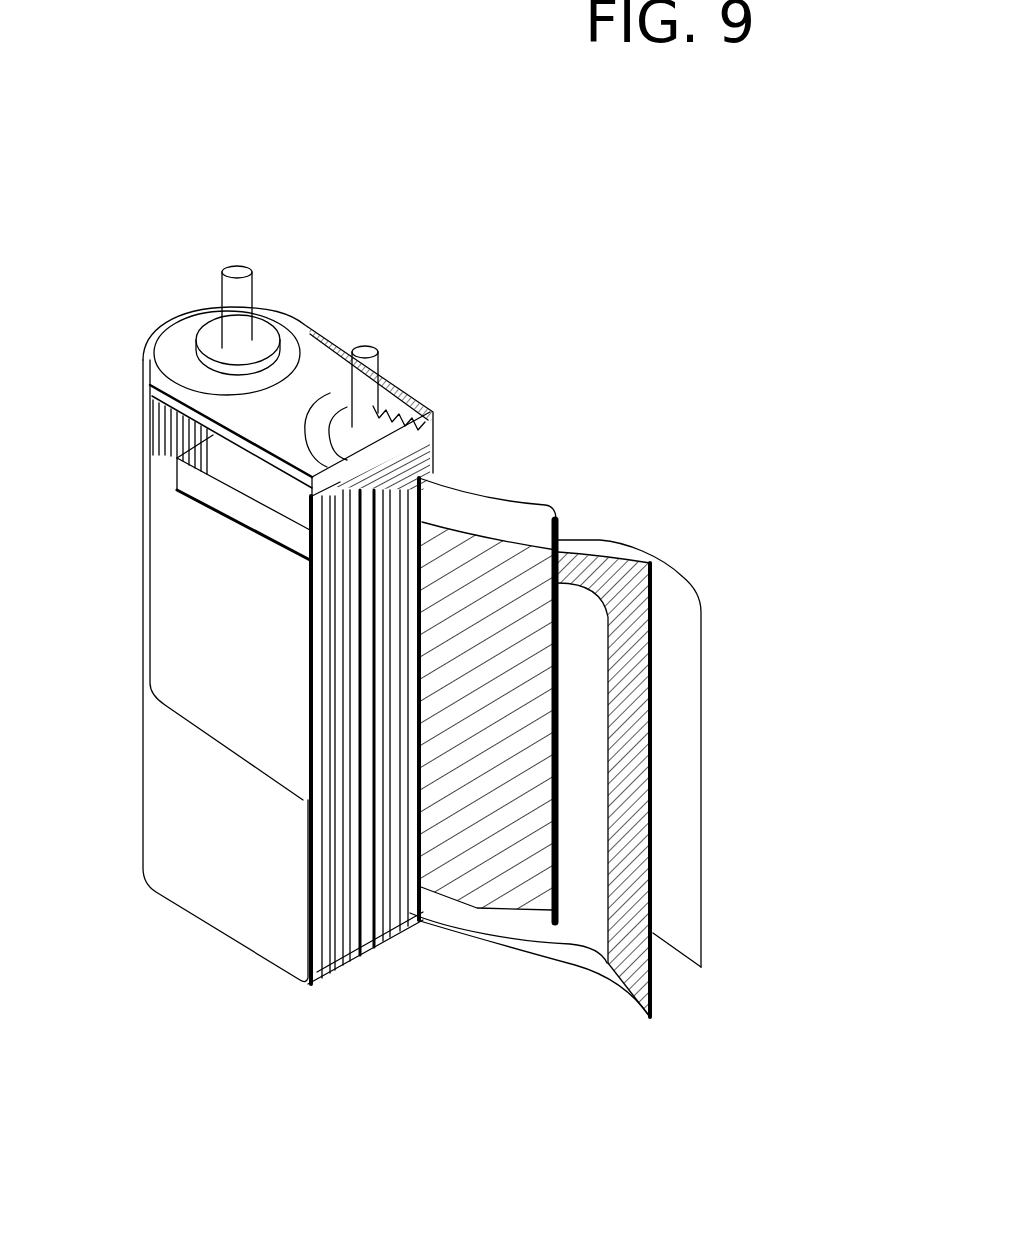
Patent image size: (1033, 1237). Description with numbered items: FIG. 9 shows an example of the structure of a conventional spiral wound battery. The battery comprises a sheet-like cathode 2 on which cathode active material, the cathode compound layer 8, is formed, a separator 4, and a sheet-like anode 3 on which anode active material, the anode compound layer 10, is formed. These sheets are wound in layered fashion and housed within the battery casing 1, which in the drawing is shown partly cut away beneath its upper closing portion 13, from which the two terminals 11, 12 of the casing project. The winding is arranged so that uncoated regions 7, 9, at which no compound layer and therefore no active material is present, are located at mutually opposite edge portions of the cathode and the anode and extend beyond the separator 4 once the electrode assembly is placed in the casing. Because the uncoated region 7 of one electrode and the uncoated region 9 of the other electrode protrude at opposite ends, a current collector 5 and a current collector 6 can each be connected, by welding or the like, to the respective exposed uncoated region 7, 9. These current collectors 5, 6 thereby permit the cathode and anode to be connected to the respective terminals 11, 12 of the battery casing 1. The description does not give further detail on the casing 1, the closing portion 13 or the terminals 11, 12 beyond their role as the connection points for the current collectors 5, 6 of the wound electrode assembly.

The battery case 1 is at (227, 853).
The positive electrode 2 is at (558, 503).
The separator 3 is at (582, 968).
The separator 4 is at (675, 598).
The current collector 5 is at (195, 476).
The current collector 6 is at (392, 920).
The uncoated region 7 is at (442, 500).
The cathode compound layer 8 is at (450, 540).
The uncoated region 9 is at (652, 1015).
The anode compound layer 10 is at (637, 930).
The positive terminal 11 is at (227, 293).
The negative terminal 12 is at (372, 348).
The sealing plate 13 is at (322, 372).